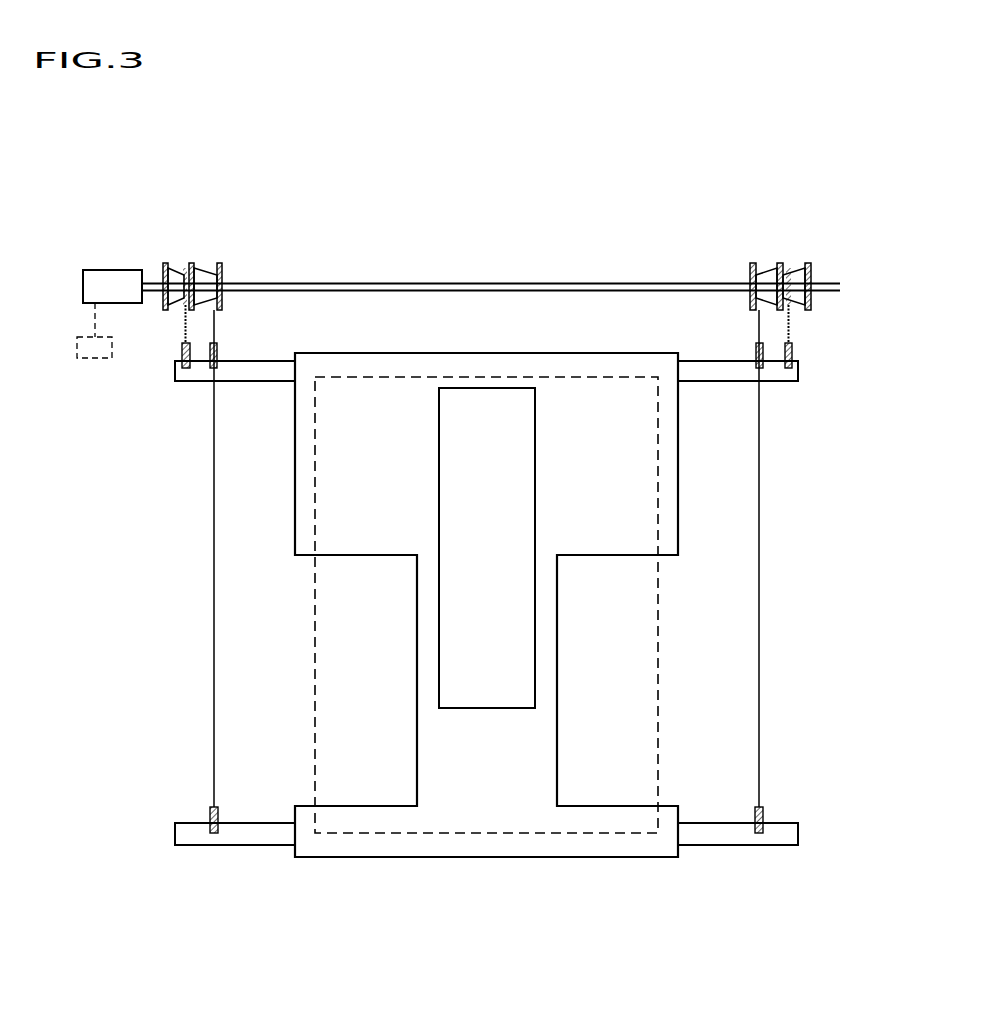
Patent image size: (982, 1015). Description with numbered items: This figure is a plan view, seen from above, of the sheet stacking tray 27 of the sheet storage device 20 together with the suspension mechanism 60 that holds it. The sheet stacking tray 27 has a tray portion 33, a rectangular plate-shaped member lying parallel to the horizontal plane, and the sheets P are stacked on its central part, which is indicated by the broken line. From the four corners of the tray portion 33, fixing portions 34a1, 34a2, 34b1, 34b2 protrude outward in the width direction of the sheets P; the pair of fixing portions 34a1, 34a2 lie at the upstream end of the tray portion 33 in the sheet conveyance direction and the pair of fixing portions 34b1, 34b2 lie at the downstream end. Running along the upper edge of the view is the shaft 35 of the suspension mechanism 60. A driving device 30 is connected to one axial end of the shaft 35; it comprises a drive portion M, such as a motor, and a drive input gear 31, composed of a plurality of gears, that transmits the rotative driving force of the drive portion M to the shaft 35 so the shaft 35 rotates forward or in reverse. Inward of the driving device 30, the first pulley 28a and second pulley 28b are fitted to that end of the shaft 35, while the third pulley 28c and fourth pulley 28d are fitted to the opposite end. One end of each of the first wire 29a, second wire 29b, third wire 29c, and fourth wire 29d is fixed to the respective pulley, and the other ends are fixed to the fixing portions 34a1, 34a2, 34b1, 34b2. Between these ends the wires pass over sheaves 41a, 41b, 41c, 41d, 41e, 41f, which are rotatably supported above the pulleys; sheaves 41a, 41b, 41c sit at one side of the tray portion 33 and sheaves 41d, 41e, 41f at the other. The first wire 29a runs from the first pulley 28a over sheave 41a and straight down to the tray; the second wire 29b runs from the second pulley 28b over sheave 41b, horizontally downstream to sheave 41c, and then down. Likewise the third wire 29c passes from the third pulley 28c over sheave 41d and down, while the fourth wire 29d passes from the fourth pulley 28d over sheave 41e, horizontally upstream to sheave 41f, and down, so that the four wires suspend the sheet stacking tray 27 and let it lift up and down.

The sheet storage device 20 is at (824, 277).
The suspension mechanism 60 is at (843, 277).
The sheet stacking tray 27 is at (478, 351).
The tray portion 33 is at (365, 480).
The sheet P is at (660, 603).
The shaft 35 is at (470, 283).
The driving device 30 is at (87, 308).
The drive input gear 31 is at (100, 282).
The drive portion M is at (80, 360).
The first pulley 28a is at (166, 262).
The second pulley 28b is at (204, 262).
The third pulley 28c is at (760, 262).
The fourth pulley 28d is at (806, 262).
The first wire 29a is at (185, 316).
The second wire 29b is at (214, 603).
The third wire 29c is at (790, 318).
The fourth wire 29d is at (760, 603).
The fixing portion 34a1 is at (176, 383).
The fixing portion 34a2 is at (798, 383).
The fixing portion 34b1 is at (176, 830).
The fixing portion 34b2 is at (800, 830).
The sheave 41a is at (183, 355).
The sheave 41b is at (217, 348).
The sheave 41c is at (218, 812).
The sheave 41d is at (757, 347).
The sheave 41e is at (793, 350).
The sheave 41f is at (757, 812).